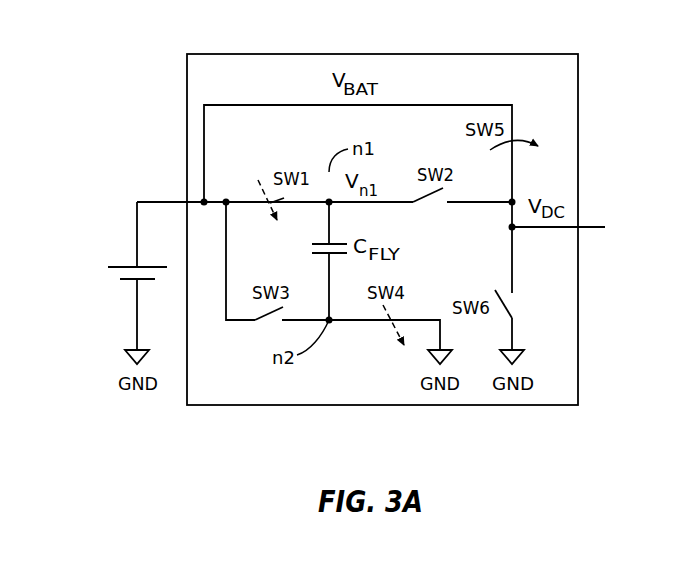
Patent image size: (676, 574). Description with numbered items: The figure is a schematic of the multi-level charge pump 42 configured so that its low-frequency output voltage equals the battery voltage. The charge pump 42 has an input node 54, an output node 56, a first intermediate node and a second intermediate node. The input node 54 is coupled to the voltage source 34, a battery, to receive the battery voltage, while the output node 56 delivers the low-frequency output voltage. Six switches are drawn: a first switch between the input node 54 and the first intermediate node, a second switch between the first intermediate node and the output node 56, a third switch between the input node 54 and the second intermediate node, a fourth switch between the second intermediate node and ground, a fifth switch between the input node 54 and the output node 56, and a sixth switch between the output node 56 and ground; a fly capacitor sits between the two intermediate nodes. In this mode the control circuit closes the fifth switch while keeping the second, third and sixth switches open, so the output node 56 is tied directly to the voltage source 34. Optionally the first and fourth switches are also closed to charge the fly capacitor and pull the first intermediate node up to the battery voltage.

The voltage source 34 is at (132, 281).
The multi-level charge pump 42 is at (226, 393).
The input node 54 is at (204, 202).
The output node 56 is at (512, 202).